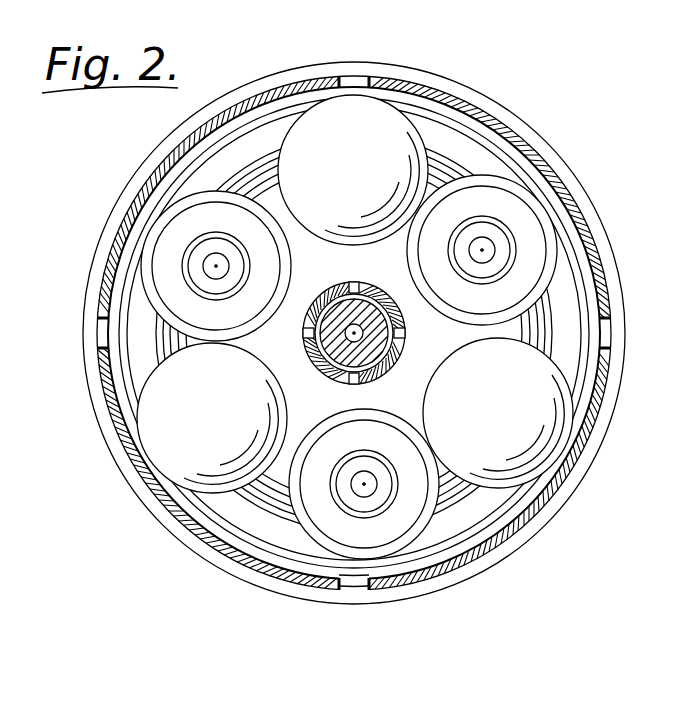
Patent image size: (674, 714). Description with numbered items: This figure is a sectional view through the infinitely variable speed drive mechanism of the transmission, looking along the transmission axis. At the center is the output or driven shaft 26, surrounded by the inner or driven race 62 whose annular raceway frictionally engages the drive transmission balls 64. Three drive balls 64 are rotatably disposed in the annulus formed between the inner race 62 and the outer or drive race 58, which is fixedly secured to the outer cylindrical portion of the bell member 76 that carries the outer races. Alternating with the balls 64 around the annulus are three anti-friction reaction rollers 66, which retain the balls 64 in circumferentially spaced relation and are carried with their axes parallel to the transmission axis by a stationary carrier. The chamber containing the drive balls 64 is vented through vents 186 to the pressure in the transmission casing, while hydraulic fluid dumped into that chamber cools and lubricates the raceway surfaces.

The driven shaft 26 is at (362, 312).
The outer race 58 is at (516, 161).
The inner race 62 is at (401, 351).
The drive transmission ball 64 is at (328, 179).
The anti-friction reaction roller 66 is at (558, 247).
The bell member 76 is at (522, 134).
The vent 186 is at (362, 587).